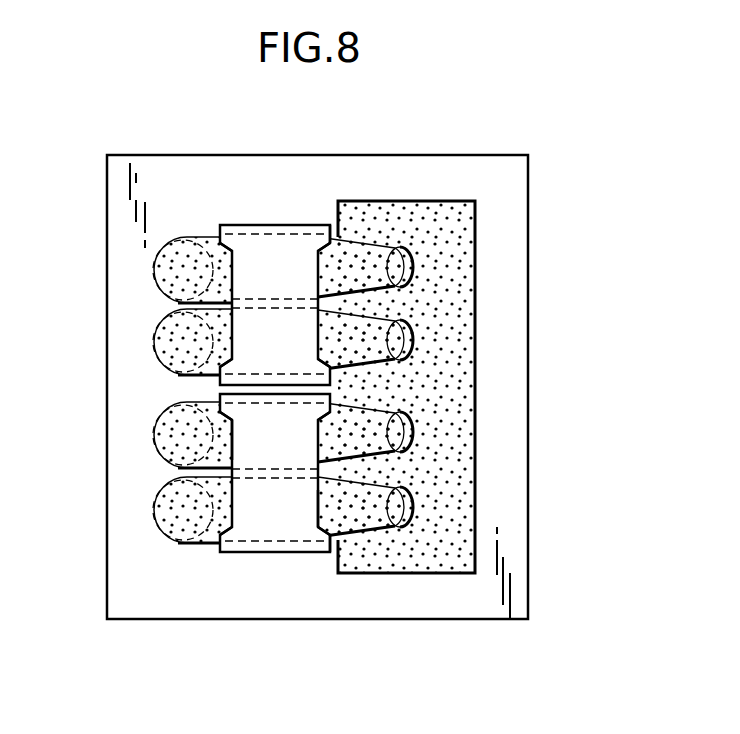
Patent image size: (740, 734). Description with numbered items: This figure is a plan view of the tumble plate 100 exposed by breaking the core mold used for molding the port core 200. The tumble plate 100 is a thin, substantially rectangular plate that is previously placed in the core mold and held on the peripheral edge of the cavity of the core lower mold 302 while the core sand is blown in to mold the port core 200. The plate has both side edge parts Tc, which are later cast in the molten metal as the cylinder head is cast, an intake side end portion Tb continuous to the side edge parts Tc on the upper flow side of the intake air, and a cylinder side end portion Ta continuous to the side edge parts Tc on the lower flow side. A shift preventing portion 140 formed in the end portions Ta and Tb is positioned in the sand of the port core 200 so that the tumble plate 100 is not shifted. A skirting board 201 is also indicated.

The core lower mold 302 is at (164, 172).
The skirting board 201 is at (432, 205).
The port core 200 is at (146, 347).
The tumble plate 100 is at (287, 248).
The shift preventing portion 140 is at (230, 238).
The both side edge parts Tc is at (331, 228).
The cylinder side end portion Ta is at (234, 443).
The intake side end portion Tb is at (318, 508).